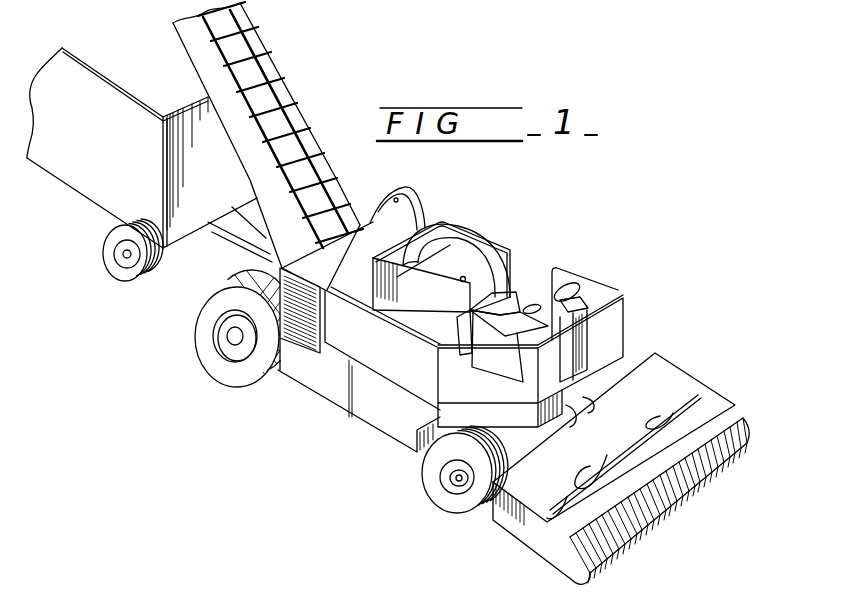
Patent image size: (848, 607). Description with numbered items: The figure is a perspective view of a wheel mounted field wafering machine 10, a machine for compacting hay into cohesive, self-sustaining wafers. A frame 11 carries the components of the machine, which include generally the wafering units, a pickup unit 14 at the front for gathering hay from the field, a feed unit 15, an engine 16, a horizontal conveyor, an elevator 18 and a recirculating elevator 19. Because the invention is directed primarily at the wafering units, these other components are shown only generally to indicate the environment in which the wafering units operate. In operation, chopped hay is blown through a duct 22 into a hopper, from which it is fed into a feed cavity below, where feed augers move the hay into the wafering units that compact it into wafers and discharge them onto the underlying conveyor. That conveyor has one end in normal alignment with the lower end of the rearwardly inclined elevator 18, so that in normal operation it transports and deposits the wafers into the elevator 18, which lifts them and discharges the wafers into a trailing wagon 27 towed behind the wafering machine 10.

The field wafering machine 10 is at (583, 228).
The frame 11 is at (377, 417).
The pickup unit 14 is at (727, 430).
The feed unit 15 is at (693, 393).
The engine 16 is at (360, 225).
The elevator 18 is at (275, 107).
The recirculating elevator 19 is at (420, 212).
The duct 22 is at (465, 245).
The trailing wagon 27 is at (90, 183).